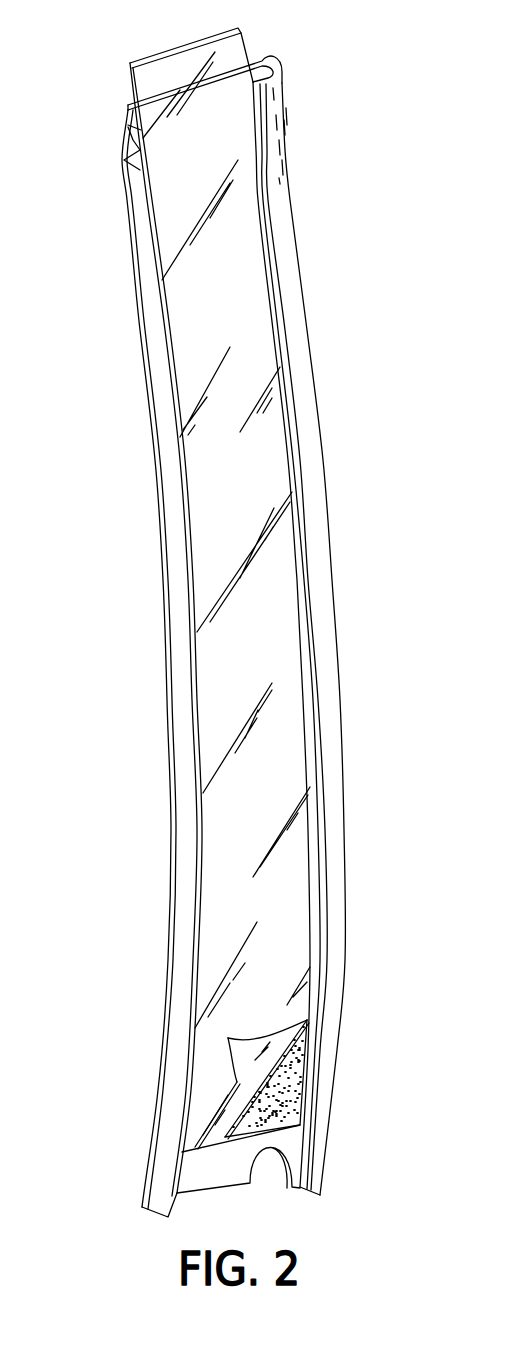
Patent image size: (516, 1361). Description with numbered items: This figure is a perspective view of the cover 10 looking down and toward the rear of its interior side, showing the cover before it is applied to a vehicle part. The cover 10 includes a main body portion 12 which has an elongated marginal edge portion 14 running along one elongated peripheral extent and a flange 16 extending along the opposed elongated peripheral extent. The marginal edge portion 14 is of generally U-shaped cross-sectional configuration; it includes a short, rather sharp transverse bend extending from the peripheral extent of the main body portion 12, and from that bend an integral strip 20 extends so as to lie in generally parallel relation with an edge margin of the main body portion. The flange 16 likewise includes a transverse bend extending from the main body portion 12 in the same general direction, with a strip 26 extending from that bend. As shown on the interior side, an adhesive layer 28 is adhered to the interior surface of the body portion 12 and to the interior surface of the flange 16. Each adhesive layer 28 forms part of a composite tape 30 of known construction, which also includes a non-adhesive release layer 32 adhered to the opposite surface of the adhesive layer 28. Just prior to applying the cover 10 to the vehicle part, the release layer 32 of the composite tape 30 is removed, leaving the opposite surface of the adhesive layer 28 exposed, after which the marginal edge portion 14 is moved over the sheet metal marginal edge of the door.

The cover 10 is at (125, 412).
The main body portion 12 is at (196, 1177).
The marginal edge portion 14 is at (360, 928).
The flange 16 is at (153, 941).
The strip 20 is at (330, 634).
The strip 26 is at (168, 749).
The adhesive layer 28 is at (287, 1105).
The composite tape 30 is at (256, 40).
The release layer 32 is at (172, 882).